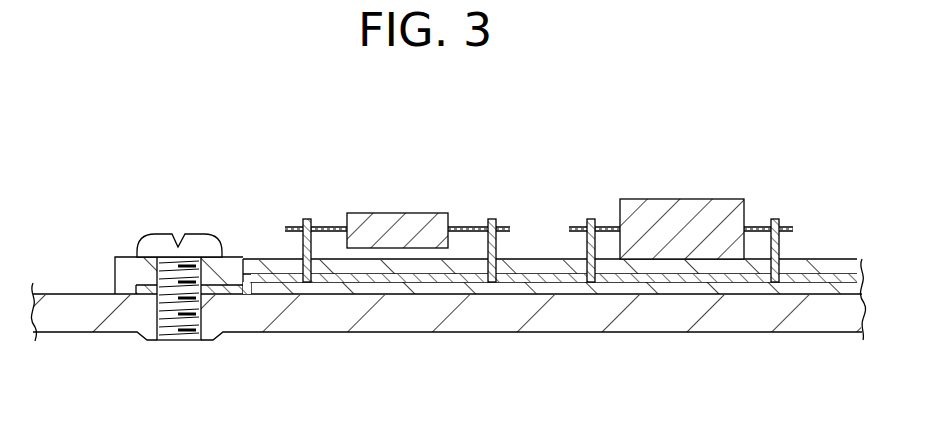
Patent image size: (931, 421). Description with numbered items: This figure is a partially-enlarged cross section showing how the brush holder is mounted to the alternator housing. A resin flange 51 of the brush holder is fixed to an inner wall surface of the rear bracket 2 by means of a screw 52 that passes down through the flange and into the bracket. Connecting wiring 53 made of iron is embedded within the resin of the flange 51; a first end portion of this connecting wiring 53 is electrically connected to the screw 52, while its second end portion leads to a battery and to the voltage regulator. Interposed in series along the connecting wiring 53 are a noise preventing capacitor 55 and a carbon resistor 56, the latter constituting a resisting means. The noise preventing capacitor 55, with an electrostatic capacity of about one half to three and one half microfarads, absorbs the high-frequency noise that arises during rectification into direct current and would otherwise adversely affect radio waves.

The rear bracket 2 is at (346, 316).
The flange 51 is at (118, 266).
The screw 52 is at (179, 232).
The connecting wiring 53 is at (543, 278).
The noise preventing capacitor 55 is at (683, 215).
The carbon resistor 56 is at (400, 224).